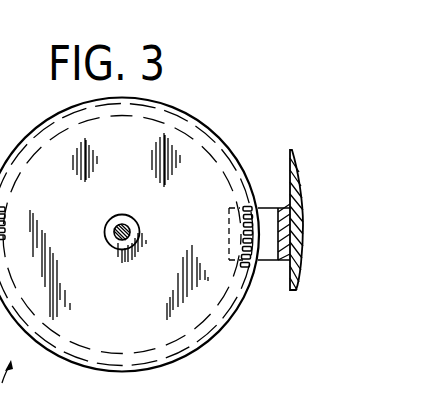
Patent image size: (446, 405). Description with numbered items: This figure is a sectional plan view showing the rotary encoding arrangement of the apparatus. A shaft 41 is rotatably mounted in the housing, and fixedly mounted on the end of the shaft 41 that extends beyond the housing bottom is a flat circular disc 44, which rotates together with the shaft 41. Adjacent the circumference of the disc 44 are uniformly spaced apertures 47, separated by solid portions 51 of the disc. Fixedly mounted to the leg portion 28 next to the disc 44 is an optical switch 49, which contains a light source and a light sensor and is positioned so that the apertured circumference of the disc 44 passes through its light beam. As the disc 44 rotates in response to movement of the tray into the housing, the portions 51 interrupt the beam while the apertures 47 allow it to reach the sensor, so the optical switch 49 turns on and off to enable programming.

The leg portion 28 is at (6, 356).
The shaft 41 is at (117, 231).
The flat circular disc 44 is at (127, 182).
The apertures 47 is at (242, 224).
The optical switch 49 is at (268, 266).
The portions of the disc separating the apertures 51 is at (4, 220).